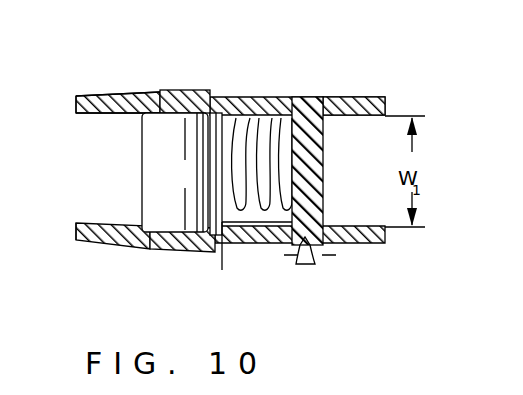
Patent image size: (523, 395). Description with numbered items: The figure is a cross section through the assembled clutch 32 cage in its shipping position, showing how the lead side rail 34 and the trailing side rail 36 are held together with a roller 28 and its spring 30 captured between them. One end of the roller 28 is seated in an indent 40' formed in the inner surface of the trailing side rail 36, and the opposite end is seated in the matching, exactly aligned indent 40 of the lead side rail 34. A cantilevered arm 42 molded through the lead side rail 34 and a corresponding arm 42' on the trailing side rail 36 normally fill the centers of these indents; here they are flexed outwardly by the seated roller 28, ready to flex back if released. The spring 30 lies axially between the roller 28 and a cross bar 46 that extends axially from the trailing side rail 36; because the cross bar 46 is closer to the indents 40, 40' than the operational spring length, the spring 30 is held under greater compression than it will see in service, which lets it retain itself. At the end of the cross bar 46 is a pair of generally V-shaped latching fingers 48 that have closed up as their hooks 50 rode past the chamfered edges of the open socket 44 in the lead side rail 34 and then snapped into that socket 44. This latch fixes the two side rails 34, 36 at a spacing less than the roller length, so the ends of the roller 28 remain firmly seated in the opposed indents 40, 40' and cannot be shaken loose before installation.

The roller 28 is at (150, 185).
The spring 30 is at (263, 112).
The clutch 32 is at (120, 88).
The lead side rail 34 is at (370, 254).
The trailing side rail 36 is at (365, 92).
The indent 40 is at (209, 272).
The indent 40' is at (239, 121).
The cantilevered arm 42 is at (138, 264).
The cantilevered arm 42' is at (170, 60).
The open socket 44 is at (311, 240).
The cross bar 46 is at (313, 97).
The latching finger 48 is at (337, 255).
The hook 50 is at (308, 264).